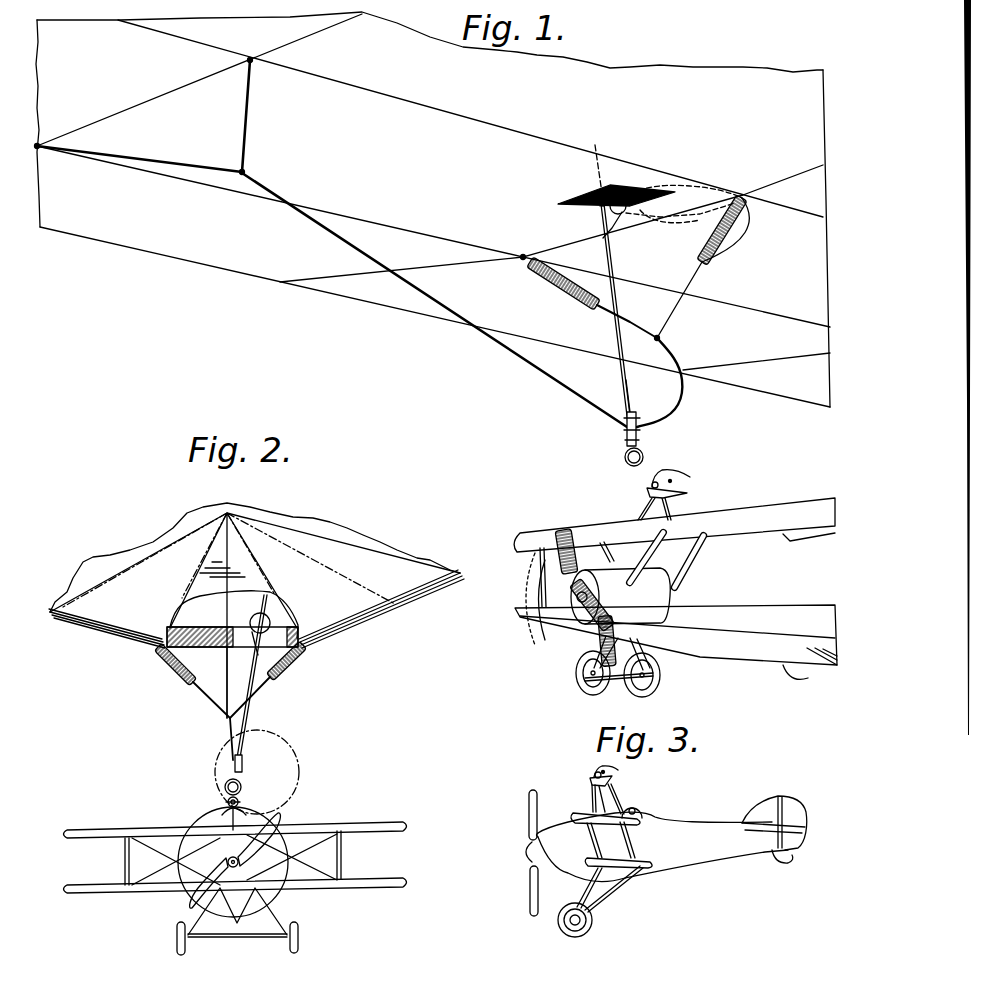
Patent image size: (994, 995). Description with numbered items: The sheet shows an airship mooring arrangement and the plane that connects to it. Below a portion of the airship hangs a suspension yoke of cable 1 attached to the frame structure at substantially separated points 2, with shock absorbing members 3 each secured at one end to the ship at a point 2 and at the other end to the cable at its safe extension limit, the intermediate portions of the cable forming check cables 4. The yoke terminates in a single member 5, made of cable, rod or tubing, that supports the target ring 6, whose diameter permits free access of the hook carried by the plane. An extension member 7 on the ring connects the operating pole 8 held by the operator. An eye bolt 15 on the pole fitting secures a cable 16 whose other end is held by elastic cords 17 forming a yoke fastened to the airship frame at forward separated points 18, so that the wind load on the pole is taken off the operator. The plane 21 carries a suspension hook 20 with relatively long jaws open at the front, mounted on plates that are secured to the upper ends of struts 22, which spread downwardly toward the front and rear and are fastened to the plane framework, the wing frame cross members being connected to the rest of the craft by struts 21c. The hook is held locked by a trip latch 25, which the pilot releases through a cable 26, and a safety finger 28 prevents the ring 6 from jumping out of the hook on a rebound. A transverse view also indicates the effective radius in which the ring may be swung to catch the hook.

In FIG. 1, the cable 1 is at (627, 317).
In FIG. 2, the cable 1 is at (258, 684).
In FIG. 1, the separated points 2 is at (748, 203).
In FIG. 2, the separated points 2 is at (156, 650).
In FIG. 1, the shock absorbing members 3 is at (704, 241).
In FIG. 2, the shock absorbing members 3 is at (183, 675).
In FIG. 1, the check cables 4 is at (735, 246).
In FIG. 1, the single member 5 is at (684, 398).
In FIG. 1, the target ring 6 is at (646, 455).
In FIG. 2, the target ring 6 is at (224, 788).
In FIG. 1, the extension member 7 is at (626, 442).
In FIG. 1, the operating pole 8 is at (632, 392).
In FIG. 2, the operating pole 8 is at (248, 722).
In FIG. 1, the eye bolt 15 is at (622, 420).
In FIG. 1, the cable 16 is at (522, 363).
In FIG. 1, the elastic cords 17 is at (193, 170).
In FIG. 1, the separated points 18 is at (250, 58).
In FIG. 1, the suspension hook 20 is at (682, 469).
In FIG. 2, the suspension hook 20 is at (240, 806).
In FIG. 3, the suspension hook 20 is at (613, 776).
In FIG. 1, the plane 21 is at (750, 612).
In FIG. 2, the plane 21 is at (293, 830).
In FIG. 3, the plane 21 is at (677, 828).
In FIG. 1, the struts 21c is at (638, 548).
In FIG. 1, the struts 22 is at (640, 506).
In FIG. 2, the struts 22 is at (226, 816).
In FIG. 3, the struts 22 is at (592, 785).
In FIG. 3, the trip latch 25 is at (634, 806).
In FIG. 3, the cable 26 is at (603, 805).
In FIG. 1, the safety finger 28 is at (645, 477).
In FIG. 3, the safety finger 28 is at (595, 775).